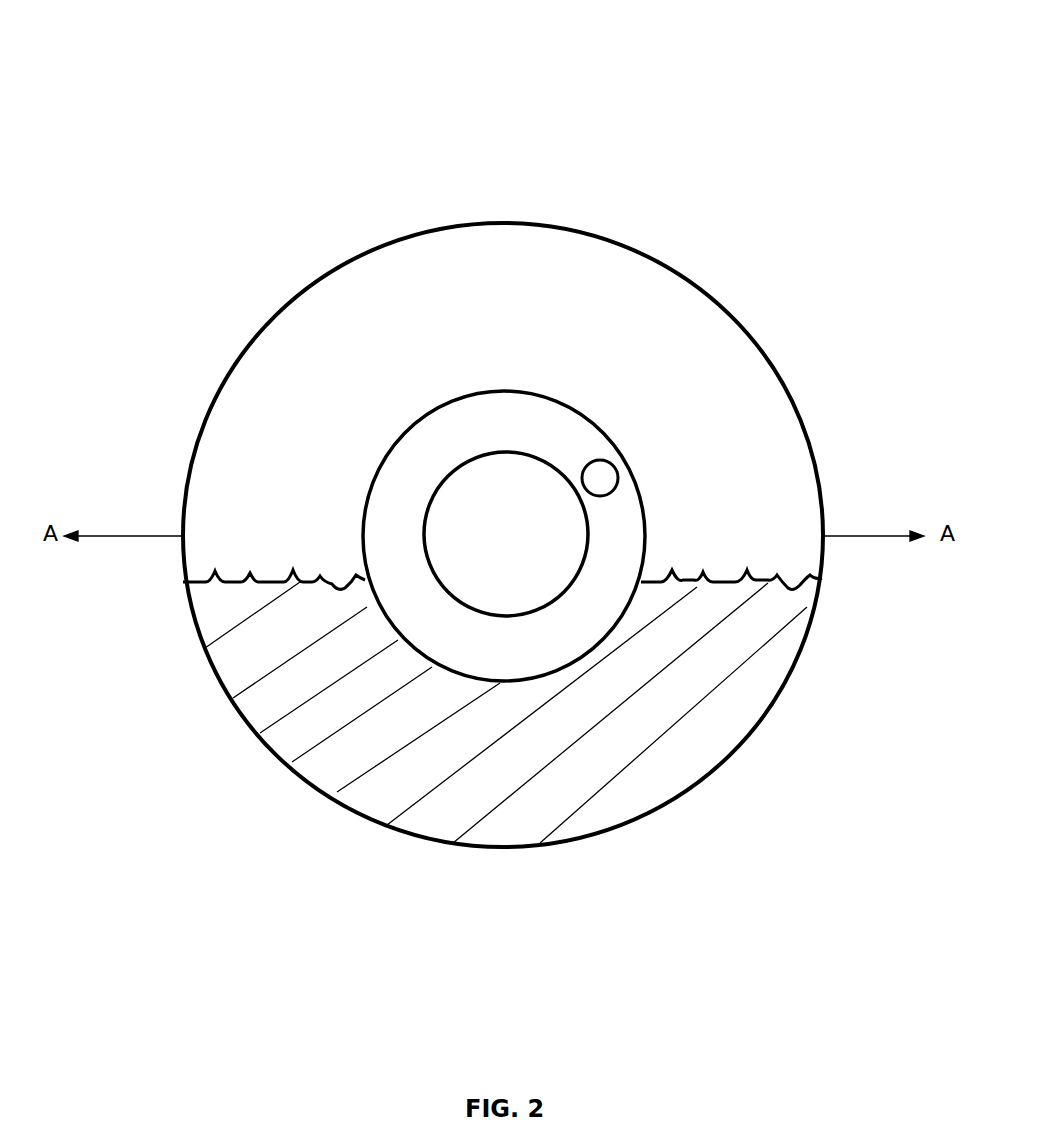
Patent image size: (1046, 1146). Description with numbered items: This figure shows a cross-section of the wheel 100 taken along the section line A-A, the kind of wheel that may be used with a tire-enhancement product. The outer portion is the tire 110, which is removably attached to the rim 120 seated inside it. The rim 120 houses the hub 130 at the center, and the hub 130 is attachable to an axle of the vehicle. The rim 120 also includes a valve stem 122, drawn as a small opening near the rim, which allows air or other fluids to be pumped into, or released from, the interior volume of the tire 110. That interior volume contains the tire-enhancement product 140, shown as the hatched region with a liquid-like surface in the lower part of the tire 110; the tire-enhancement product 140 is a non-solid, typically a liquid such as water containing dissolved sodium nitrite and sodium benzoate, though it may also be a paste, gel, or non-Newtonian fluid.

The wheel 100 is at (695, 116).
The tire 110 is at (782, 377).
The rim 120 is at (502, 423).
The valve stem 122 is at (598, 477).
The hub 130 is at (526, 557).
The tire-enhancement product 140 is at (747, 695).